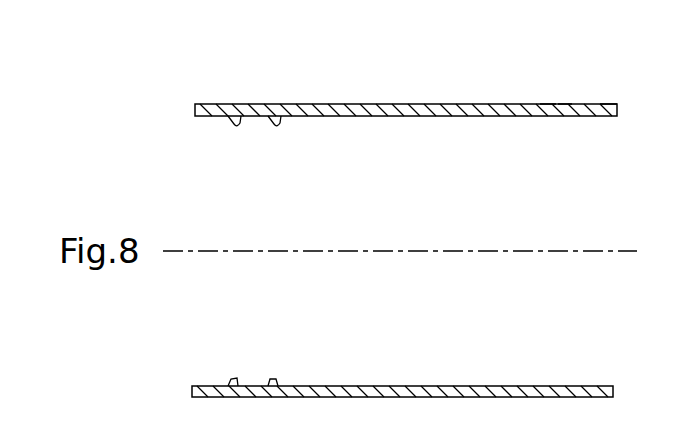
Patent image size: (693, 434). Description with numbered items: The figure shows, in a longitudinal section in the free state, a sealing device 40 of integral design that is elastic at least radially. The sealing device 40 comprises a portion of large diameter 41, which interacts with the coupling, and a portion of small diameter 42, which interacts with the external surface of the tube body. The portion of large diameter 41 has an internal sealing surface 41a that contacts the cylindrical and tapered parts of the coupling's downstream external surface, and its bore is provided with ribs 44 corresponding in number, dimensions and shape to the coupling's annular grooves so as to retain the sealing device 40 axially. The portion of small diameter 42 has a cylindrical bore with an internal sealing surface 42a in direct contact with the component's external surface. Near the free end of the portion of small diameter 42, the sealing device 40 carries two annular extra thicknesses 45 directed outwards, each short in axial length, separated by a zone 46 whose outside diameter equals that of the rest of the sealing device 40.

The sealing device 40 is at (215, 96).
The portion of large diameter 41 is at (300, 110).
The internal sealing surface 41a is at (210, 117).
The portion of small diameter 42 is at (523, 117).
The internal sealing surface 42a is at (600, 117).
The rib 44 is at (273, 378).
The extra thickness 45 is at (548, 103).
The zone 46 is at (565, 103).